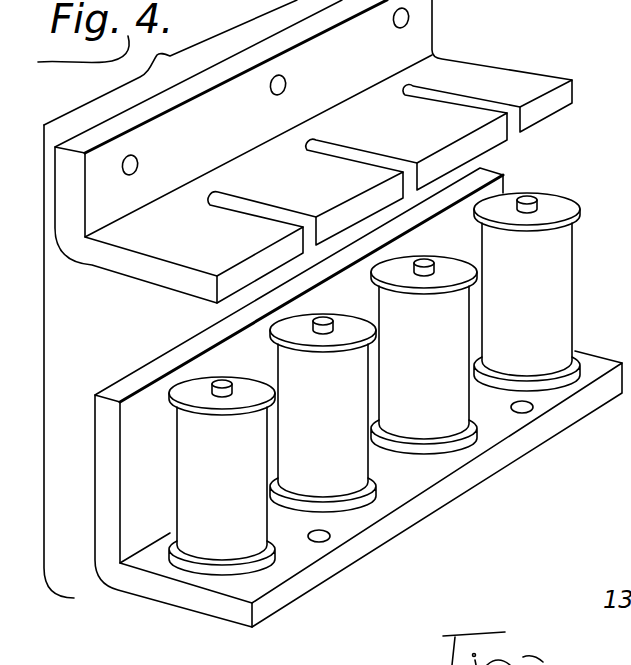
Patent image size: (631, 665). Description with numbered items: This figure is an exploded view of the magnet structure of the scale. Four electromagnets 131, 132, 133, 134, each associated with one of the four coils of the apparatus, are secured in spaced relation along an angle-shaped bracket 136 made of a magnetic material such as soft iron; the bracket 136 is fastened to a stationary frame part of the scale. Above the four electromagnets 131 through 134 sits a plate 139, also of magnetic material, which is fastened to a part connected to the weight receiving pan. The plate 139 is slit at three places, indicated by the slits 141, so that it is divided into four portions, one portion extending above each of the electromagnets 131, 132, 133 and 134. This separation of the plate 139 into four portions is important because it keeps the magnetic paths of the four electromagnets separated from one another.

The plate 139 is at (425, 38).
The slits 141 is at (268, 210).
The angle-shaped bracket 136 is at (422, 512).
The electromagnet 131 is at (558, 304).
The electromagnet 132 is at (446, 381).
The electromagnet 133 is at (342, 436).
The electromagnet 134 is at (243, 506).